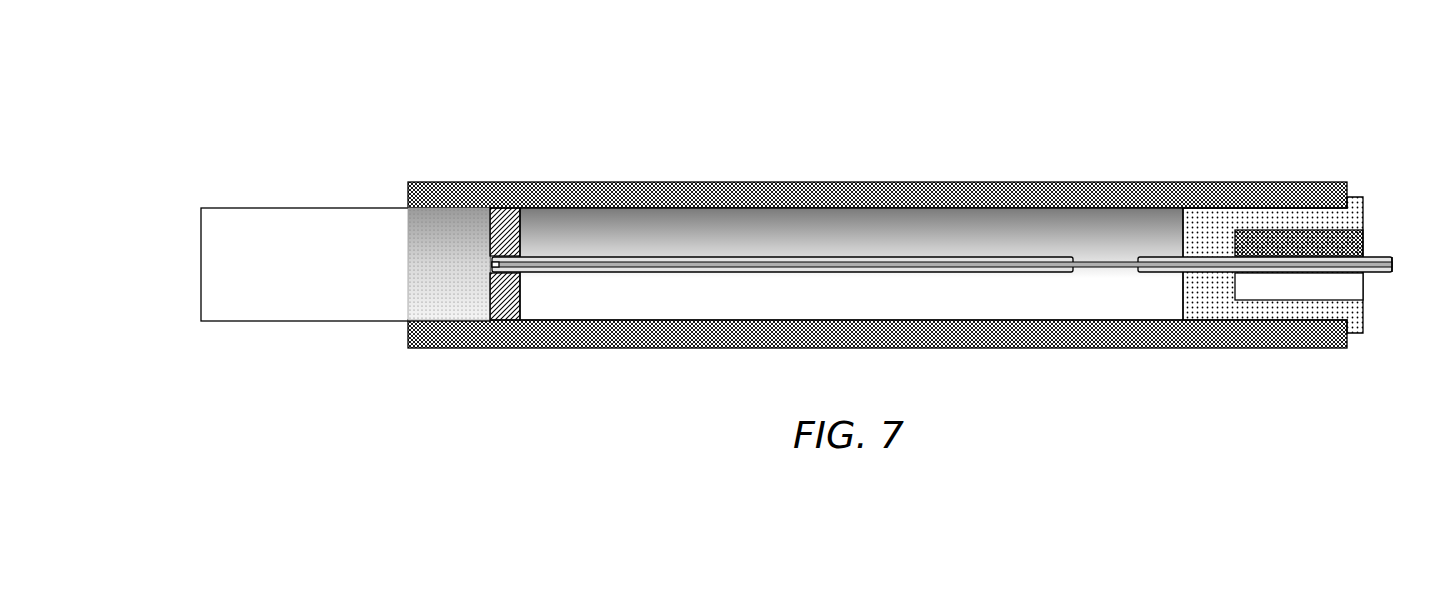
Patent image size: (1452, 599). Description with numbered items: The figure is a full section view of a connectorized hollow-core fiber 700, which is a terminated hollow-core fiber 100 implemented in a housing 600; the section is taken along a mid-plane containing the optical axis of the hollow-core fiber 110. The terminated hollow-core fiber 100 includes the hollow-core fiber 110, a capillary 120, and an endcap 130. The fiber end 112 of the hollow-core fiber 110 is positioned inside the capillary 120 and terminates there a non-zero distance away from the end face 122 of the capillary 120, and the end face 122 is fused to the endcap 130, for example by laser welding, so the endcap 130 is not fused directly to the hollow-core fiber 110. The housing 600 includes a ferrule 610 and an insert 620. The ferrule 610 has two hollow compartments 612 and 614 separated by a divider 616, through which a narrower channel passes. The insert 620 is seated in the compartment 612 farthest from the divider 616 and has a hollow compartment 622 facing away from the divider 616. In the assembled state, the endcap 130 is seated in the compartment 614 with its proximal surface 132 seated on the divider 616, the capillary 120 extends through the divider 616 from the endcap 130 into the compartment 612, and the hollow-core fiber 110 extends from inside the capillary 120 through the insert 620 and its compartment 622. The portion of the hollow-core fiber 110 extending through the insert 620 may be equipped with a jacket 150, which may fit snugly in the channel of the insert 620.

The connectorized hollow-core fiber 700 is at (236, 48).
The terminated hollow-core fiber 100 is at (218, 180).
The hollow-core fiber 110 is at (1098, 258).
The fiber end 112 is at (590, 266).
The capillary 120 is at (712, 272).
The end face 122 is at (484, 258).
The endcap 130 is at (361, 278).
The proximal surface 132 is at (500, 233).
The jacket 150 is at (1378, 254).
The housing 600 is at (1355, 137).
The ferrule 610 is at (700, 181).
The compartment 612 is at (901, 310).
The compartment 614 is at (463, 311).
The divider 616 is at (516, 288).
The insert 620 is at (1366, 308).
The compartment 622 is at (1321, 297).